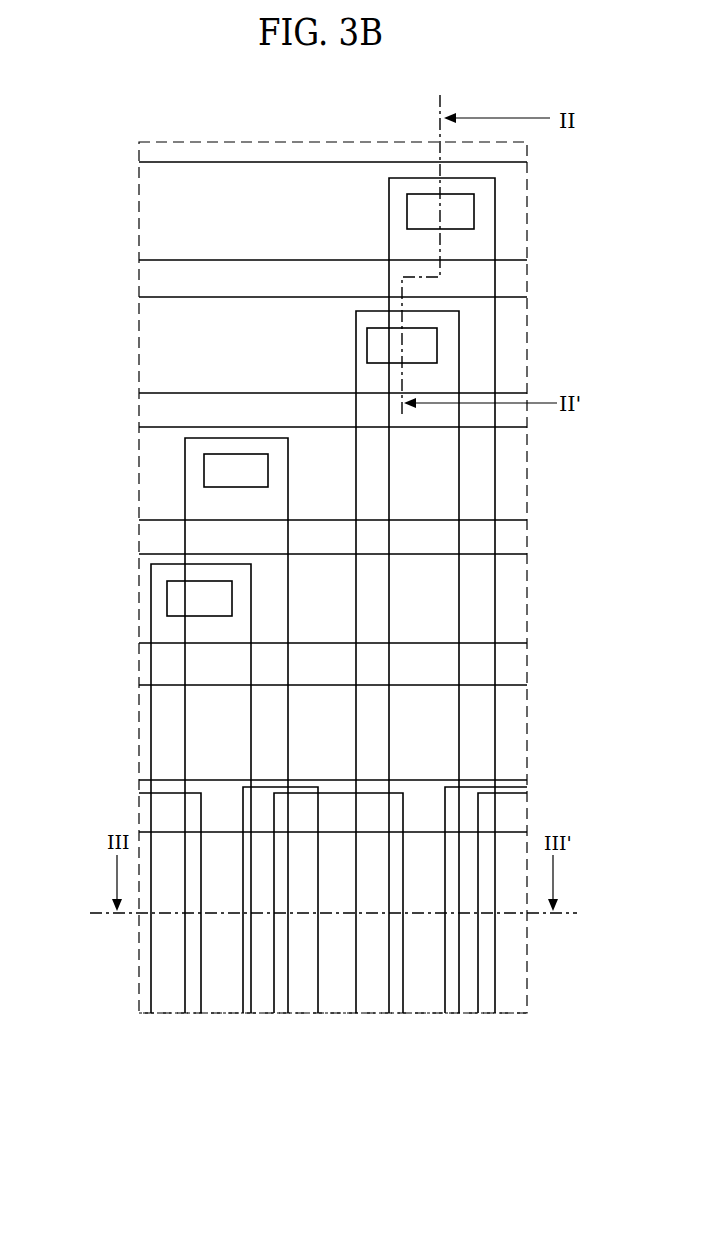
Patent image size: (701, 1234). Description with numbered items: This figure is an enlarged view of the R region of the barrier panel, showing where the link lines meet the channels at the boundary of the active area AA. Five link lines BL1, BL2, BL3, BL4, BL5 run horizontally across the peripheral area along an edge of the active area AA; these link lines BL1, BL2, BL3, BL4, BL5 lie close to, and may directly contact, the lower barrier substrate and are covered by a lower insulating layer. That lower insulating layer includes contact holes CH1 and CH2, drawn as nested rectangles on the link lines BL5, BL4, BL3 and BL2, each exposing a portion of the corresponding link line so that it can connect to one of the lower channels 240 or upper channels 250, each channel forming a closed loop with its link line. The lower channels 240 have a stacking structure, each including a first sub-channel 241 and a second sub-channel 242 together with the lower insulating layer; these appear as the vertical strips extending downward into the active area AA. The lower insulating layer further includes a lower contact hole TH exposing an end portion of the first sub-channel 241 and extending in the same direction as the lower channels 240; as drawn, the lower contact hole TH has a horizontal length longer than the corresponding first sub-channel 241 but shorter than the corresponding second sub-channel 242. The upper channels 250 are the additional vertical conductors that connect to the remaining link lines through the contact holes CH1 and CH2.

The R region R is at (206, 142).
The link line BL5 is at (157, 210).
The link line BL4 is at (157, 347).
The link line BL3 is at (157, 448).
The link line BL2 is at (518, 600).
The link line BL1 is at (518, 738).
The contact hole CH1 is at (476, 211).
The contact hole CH2 is at (439, 345).
The upper channels 250 is at (157, 706).
The lower contact hole TH is at (242, 957).
The active area AA is at (518, 967).
The lower channels 240 is at (323, 952).
The first sub-channel 241 is at (338, 934).
The second sub-channel 242 is at (262, 1013).